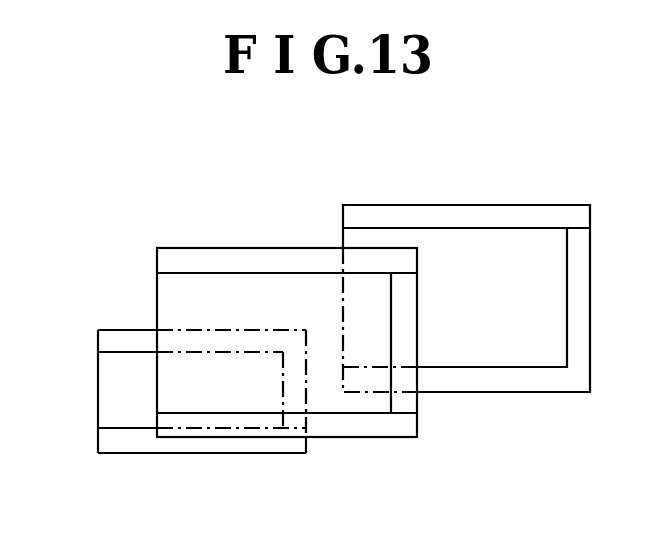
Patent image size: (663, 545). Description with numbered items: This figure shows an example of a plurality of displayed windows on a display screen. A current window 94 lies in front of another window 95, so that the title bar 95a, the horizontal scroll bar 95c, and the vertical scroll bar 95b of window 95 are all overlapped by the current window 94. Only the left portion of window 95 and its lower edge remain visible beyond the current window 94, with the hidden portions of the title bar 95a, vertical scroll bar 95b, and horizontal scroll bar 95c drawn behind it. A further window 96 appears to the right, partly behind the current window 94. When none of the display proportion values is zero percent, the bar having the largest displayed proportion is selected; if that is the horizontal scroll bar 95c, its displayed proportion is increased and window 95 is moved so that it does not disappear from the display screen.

The current window 94 is at (233, 248).
The window 95 is at (211, 389).
The title bar 95a is at (135, 338).
The vertical scroll bar 95b is at (300, 401).
The horizontal scroll bar 95c is at (125, 444).
The frame 96 is at (513, 205).